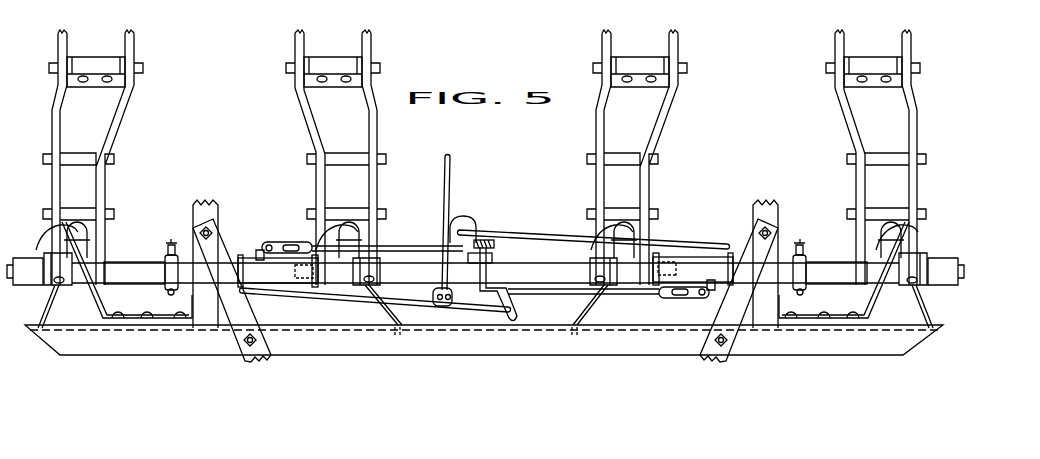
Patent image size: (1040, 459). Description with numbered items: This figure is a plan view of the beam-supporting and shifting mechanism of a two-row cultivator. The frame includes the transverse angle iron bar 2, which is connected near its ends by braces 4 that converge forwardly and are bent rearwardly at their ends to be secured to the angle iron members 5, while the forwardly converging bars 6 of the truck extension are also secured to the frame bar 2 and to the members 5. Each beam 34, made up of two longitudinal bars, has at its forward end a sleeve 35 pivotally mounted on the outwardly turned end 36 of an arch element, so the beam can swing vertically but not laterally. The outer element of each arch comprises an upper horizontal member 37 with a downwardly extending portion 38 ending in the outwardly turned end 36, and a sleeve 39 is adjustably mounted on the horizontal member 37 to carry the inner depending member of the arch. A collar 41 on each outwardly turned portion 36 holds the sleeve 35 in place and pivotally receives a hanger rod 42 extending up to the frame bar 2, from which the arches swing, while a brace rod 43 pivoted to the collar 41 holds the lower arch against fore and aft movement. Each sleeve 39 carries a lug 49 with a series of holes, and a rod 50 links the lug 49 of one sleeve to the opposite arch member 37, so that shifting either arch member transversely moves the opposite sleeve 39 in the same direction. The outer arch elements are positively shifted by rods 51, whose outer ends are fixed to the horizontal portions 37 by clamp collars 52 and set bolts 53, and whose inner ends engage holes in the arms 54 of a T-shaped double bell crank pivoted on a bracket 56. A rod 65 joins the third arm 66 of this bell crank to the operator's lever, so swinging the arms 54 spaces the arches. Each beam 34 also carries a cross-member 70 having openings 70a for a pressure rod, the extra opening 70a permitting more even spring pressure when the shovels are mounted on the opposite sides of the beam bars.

The transverse angle iron bar 2 is at (918, 350).
The brace 4 is at (100, 325).
The angle iron member 5 is at (210, 205).
The forwardly converging bar 6 is at (220, 238).
The beam 34 is at (125, 41).
The sleeve 35 is at (40, 260).
The outwardly turned end 36 is at (979, 280).
The upper horizontal member 37 is at (140, 280).
The downwardly extending portion 38 is at (112, 270).
The sleeve 39 is at (262, 257).
The collar 41 is at (62, 286).
The hanger rod 42 is at (38, 325).
The brace rod 43 is at (60, 232).
The lug 49 is at (258, 250).
The rod 50 is at (310, 243).
The rod 51 is at (296, 296).
The clamp collar 52 is at (165, 285).
The set bolt 53 is at (172, 245).
The arm 54 is at (466, 218).
The bracket 56 is at (485, 240).
The rod 65 is at (450, 160).
The third arm 66 is at (443, 306).
The cross-member 70 is at (104, 73).
The opening 70a is at (105, 83).